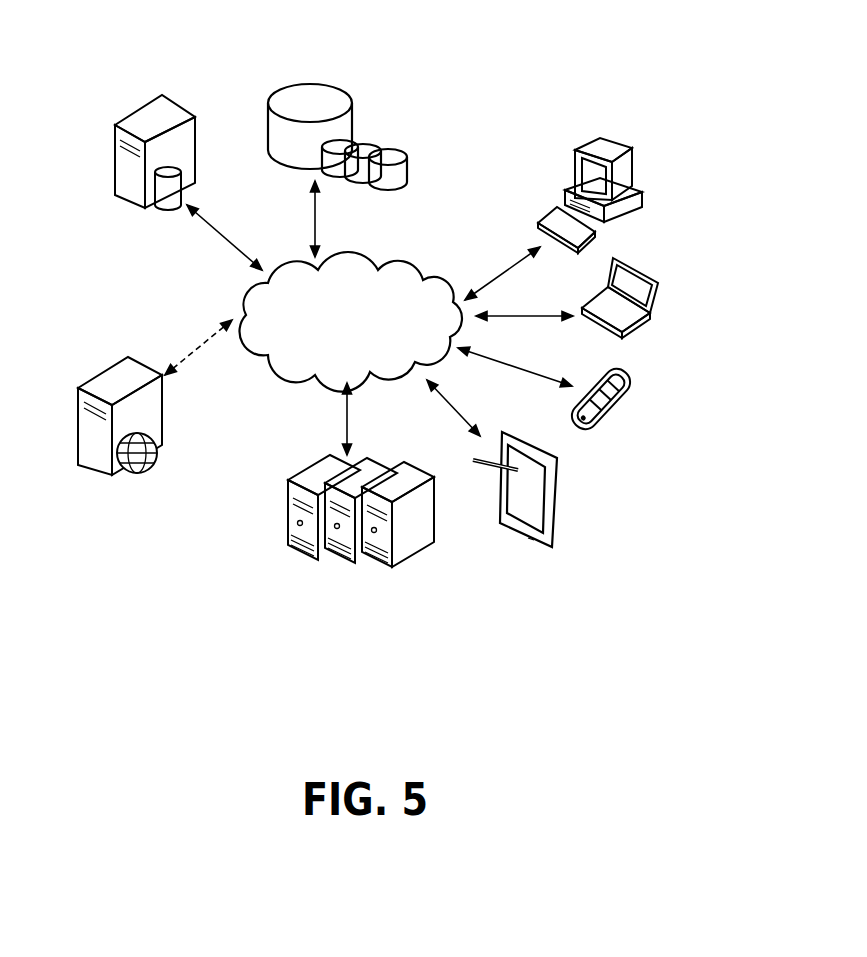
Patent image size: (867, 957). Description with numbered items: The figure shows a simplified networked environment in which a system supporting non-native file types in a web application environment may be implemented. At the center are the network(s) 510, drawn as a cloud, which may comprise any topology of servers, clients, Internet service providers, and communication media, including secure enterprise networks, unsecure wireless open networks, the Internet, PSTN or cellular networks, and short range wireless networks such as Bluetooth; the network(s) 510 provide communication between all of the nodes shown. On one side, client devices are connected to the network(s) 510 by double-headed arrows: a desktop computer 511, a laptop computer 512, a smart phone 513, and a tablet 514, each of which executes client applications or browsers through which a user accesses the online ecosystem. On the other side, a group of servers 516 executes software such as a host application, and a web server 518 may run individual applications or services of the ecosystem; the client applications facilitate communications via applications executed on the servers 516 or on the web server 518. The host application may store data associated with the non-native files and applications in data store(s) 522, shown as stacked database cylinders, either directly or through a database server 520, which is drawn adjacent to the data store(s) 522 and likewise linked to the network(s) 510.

The network(s) 510 is at (350, 243).
The desktop computer 511 is at (637, 155).
The laptop computer 512 is at (658, 257).
The smart phone 513 is at (630, 368).
The tablet 514 is at (568, 477).
The servers 516 is at (313, 462).
The web server 518 is at (98, 365).
The database server 520 is at (168, 217).
The data store(s) 522 is at (325, 60).